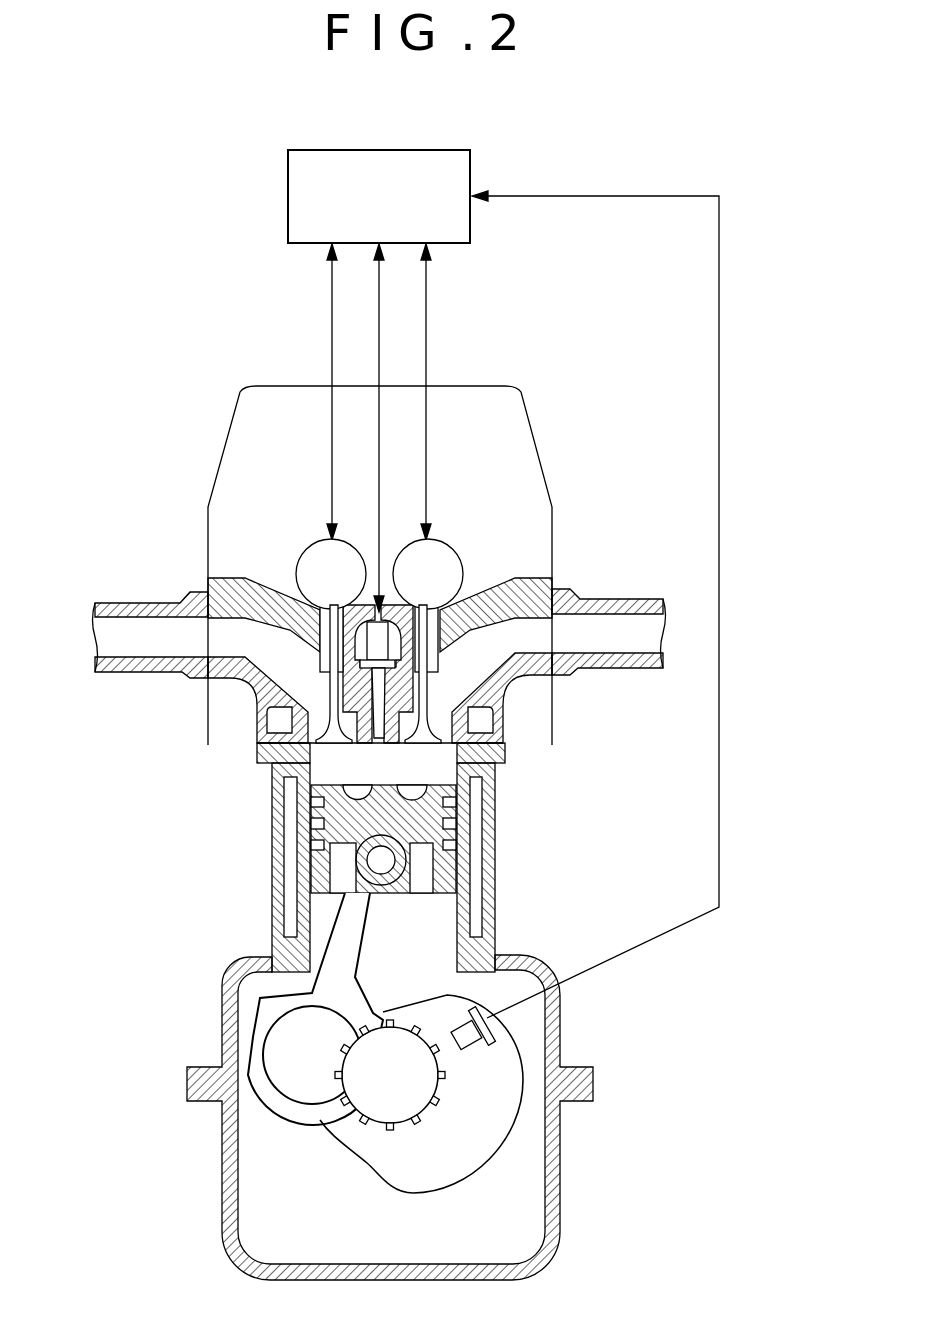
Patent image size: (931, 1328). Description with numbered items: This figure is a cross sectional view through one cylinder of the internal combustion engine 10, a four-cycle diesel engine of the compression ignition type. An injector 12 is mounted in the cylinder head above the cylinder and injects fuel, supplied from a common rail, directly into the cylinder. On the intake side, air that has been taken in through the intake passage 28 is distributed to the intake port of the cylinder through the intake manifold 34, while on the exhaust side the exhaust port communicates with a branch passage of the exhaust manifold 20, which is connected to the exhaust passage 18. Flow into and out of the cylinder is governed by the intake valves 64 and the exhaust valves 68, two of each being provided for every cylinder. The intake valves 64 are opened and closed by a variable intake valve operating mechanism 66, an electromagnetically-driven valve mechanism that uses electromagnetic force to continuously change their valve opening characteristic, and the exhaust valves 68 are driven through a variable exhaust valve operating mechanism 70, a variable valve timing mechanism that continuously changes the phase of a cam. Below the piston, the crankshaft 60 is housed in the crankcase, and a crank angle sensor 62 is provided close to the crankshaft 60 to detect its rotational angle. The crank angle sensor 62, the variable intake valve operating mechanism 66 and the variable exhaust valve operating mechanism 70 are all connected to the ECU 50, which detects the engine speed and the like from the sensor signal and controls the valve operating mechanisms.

The internal combustion engine 10 is at (250, 935).
The injector 12 is at (323, 810).
The exhaust passage 18 is at (684, 604).
The exhaust manifold 20 is at (640, 623).
The intake passage 28 is at (151, 603).
The intake manifold 34 is at (148, 630).
The ECU 50 is at (428, 150).
The crankshaft 60 is at (387, 1112).
The crank angle sensor 62 is at (473, 1032).
The intake valve 64 is at (328, 738).
The variable intake valve operating mechanism 66 is at (316, 555).
The exhaust valve 68 is at (432, 738).
The variable exhaust valve operating mechanism 70 is at (444, 555).